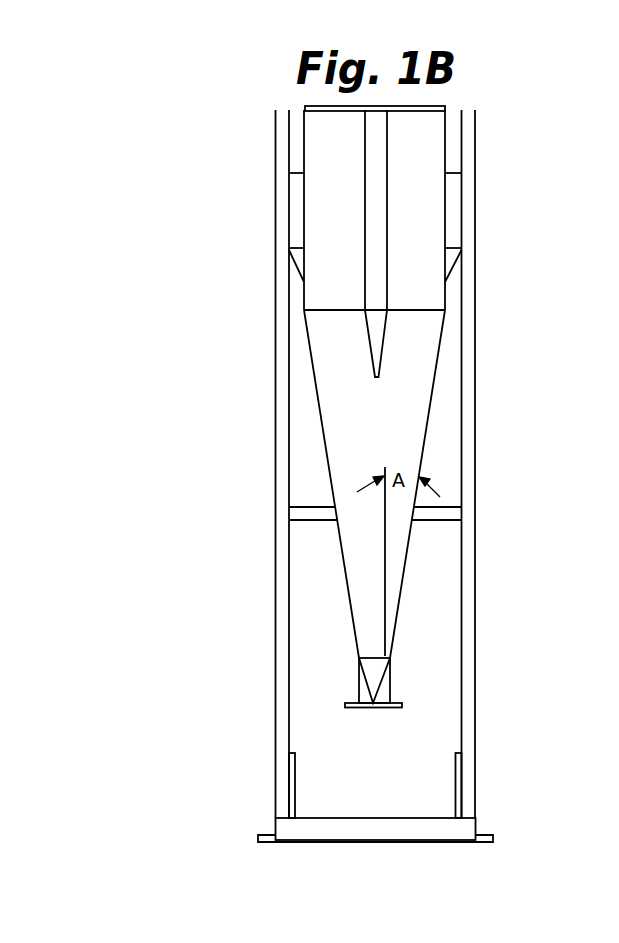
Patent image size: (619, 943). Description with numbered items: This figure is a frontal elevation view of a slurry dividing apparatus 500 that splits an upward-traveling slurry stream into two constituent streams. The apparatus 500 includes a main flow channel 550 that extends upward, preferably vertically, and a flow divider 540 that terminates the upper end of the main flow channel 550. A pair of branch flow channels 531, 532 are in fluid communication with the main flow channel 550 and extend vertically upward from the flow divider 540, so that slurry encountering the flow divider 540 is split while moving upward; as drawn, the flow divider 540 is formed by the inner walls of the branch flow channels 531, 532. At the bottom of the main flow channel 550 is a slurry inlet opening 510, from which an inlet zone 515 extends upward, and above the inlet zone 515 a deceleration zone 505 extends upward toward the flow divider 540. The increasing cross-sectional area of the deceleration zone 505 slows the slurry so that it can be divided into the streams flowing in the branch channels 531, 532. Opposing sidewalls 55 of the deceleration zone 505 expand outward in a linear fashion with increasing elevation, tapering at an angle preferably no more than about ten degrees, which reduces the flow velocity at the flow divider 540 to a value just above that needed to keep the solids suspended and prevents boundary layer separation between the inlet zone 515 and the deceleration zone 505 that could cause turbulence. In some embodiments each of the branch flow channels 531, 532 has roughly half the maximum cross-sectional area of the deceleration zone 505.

The slurry dividing apparatus 500 is at (503, 741).
The branch flow channel 531 is at (267, 368).
The branch flow channel 532 is at (485, 110).
The main flow channel 550 is at (455, 373).
The flow divider 540 is at (368, 373).
The deceleration zone 505 is at (353, 482).
The opposing sidewalls 55 is at (405, 564).
The inlet zone 515 is at (358, 668).
The slurry inlet opening 510 is at (369, 709).